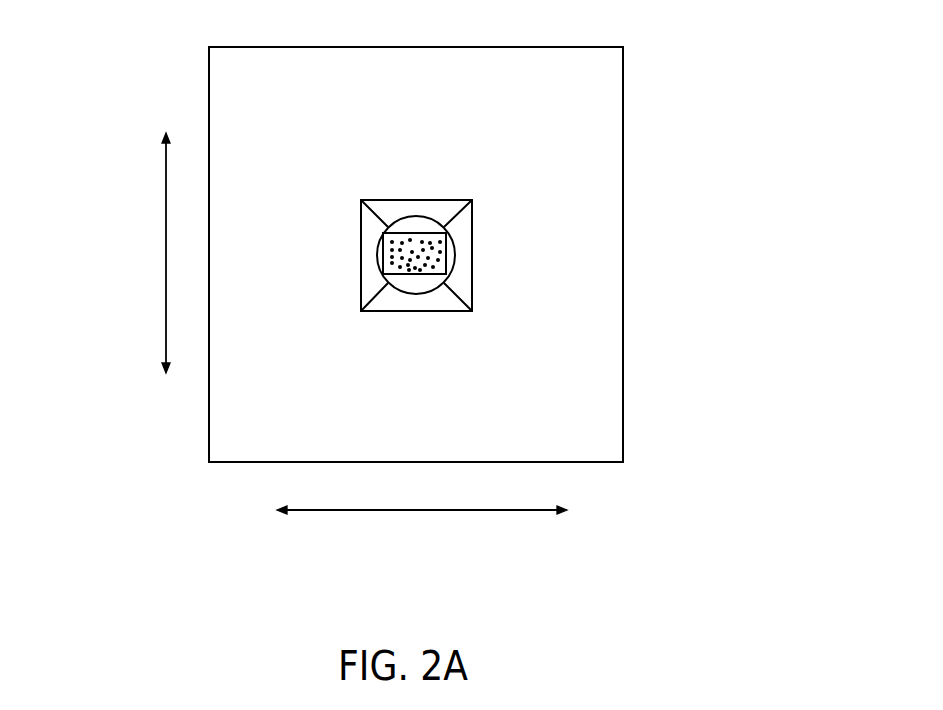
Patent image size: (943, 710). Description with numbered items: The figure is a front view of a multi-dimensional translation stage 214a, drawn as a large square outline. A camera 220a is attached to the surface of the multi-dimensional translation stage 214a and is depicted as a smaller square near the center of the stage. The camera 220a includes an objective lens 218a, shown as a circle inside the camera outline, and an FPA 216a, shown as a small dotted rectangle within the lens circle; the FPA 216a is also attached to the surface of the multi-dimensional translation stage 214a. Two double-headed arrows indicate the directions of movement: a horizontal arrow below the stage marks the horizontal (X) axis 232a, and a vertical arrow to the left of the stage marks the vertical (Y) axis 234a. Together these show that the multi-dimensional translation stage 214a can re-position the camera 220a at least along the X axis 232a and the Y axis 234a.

The multi-dimensional translation stage 214a is at (623, 122).
The FPA 216a is at (416, 275).
The objective lens 218a is at (417, 224).
The camera 220a is at (472, 247).
The horizontal (X) axis 232a is at (390, 510).
The vertical (Y) axis 234a is at (166, 270).